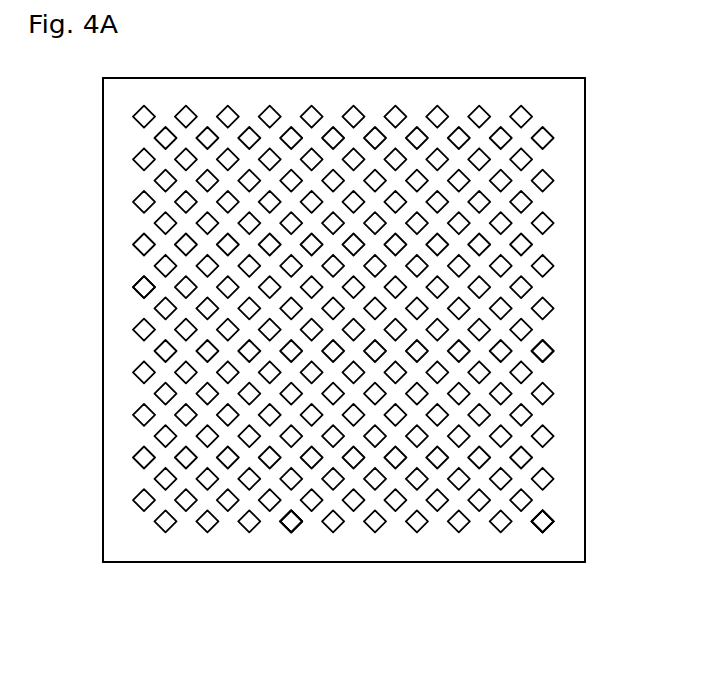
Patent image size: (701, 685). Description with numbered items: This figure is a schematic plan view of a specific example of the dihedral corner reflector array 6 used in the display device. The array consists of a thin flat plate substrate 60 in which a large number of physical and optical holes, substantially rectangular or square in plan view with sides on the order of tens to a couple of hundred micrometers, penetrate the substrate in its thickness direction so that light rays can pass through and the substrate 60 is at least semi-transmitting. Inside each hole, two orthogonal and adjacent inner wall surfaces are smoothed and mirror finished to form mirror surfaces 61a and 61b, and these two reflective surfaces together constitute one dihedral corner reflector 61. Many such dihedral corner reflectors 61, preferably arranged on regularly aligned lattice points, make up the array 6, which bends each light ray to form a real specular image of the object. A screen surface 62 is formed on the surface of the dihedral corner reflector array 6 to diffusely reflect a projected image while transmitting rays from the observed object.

The dihedral corner reflector array 6 is at (565, 65).
The flat plate substrate 60 is at (578, 190).
The dihedral corner reflector 61 is at (328, 615).
The mirror surface 61a is at (547, 350).
The mirror surface 61b is at (140, 288).
The screen surface 62 is at (137, 133).